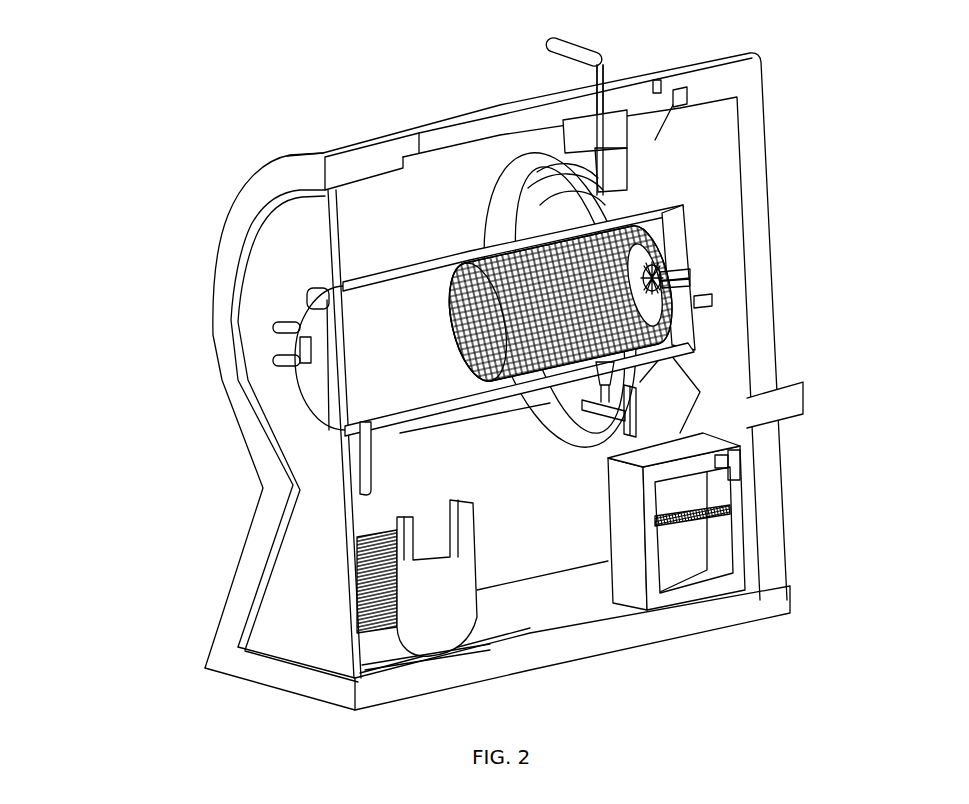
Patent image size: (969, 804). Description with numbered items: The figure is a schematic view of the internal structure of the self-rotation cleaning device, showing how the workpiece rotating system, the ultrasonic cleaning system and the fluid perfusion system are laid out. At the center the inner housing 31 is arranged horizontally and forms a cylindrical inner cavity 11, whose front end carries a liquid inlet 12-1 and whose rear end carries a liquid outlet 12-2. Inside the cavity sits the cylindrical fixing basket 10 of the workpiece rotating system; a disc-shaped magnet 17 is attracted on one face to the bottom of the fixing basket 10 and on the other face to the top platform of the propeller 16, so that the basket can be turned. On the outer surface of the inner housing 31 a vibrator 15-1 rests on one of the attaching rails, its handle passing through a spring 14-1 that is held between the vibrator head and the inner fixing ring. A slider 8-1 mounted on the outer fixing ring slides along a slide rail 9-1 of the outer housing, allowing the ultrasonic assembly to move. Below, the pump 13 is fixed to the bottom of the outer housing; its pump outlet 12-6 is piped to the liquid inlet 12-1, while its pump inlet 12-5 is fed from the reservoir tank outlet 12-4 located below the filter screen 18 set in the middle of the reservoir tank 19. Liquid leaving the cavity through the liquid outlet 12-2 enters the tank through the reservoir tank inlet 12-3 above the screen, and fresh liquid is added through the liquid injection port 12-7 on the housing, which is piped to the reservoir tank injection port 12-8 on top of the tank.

The slider 8-1 is at (562, 120).
The slide rail 9-1 is at (463, 148).
The fixing basket 10 is at (473, 343).
The inner cavity 11 is at (383, 362).
The liquid inlet 12-1 is at (362, 460).
The liquid outlet 12-2 is at (708, 303).
The reservoir tank inlet 12-3 is at (740, 473).
The reservoir tank outlet 12-4 is at (653, 568).
The pump inlet 12-5 is at (457, 517).
The pump outlet 12-6 is at (400, 532).
The liquid injection port 12-7 is at (792, 408).
The reservoir tank injection port 12-8 is at (718, 457).
The pump 13 is at (433, 607).
The spring 14-1 is at (606, 196).
The vibrator 15-1 is at (608, 213).
The propeller 16 is at (688, 268).
The disc-shaped magnet 17 is at (688, 282).
The filter screen 18 is at (695, 520).
The reservoir tank 19 is at (650, 533).
The inner housing 31 is at (558, 247).